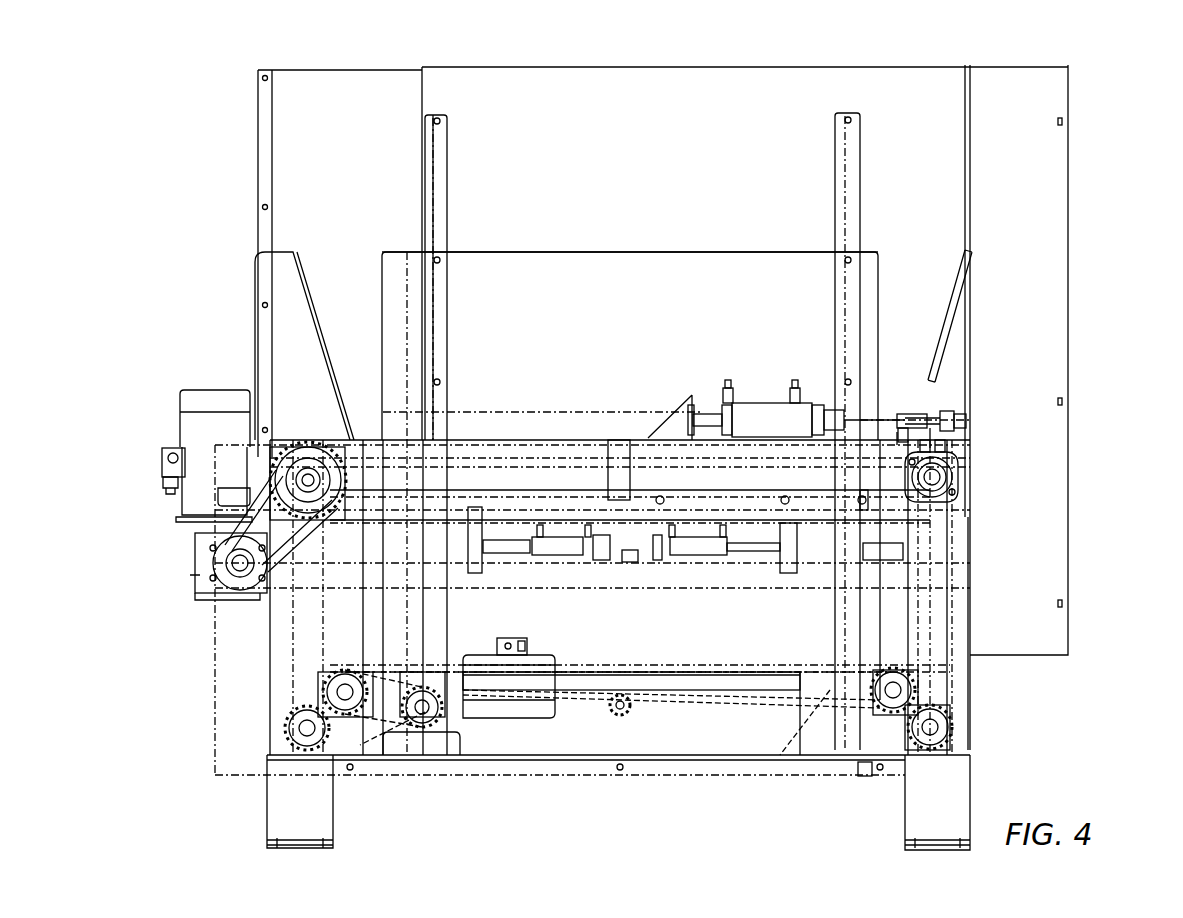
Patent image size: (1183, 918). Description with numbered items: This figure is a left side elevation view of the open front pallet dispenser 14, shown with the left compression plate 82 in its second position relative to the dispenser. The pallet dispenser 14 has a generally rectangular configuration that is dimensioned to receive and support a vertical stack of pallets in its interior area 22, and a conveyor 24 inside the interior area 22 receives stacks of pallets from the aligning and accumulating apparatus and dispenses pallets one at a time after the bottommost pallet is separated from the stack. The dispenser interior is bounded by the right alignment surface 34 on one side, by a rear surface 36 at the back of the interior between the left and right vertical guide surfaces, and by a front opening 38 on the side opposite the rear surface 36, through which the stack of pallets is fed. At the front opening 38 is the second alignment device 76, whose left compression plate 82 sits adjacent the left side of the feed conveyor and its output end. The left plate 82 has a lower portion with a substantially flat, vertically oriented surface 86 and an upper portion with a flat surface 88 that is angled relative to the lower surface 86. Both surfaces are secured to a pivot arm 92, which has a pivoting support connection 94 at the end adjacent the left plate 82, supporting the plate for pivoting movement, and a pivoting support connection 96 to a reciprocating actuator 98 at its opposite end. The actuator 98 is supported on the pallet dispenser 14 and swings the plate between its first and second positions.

The open front pallet dispenser 14 is at (218, 294).
The interior area 22 is at (580, 300).
The conveyor 24 is at (820, 668).
The right alignment surface 34 is at (730, 300).
The rear surface 36 is at (350, 432).
The front opening 38 is at (1018, 515).
The second alignment device 76 is at (985, 316).
The left compression plate 82 is at (987, 340).
The lower portion surface 86 is at (912, 428).
The upper portion surface 88 is at (947, 313).
The pivot arm 92 is at (945, 418).
The pivoting support connection 94 is at (928, 512).
The pivoting support connection 96 is at (948, 412).
The reciprocating actuator 98 is at (765, 402).